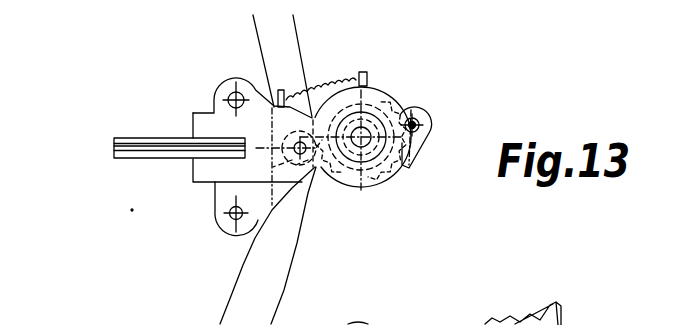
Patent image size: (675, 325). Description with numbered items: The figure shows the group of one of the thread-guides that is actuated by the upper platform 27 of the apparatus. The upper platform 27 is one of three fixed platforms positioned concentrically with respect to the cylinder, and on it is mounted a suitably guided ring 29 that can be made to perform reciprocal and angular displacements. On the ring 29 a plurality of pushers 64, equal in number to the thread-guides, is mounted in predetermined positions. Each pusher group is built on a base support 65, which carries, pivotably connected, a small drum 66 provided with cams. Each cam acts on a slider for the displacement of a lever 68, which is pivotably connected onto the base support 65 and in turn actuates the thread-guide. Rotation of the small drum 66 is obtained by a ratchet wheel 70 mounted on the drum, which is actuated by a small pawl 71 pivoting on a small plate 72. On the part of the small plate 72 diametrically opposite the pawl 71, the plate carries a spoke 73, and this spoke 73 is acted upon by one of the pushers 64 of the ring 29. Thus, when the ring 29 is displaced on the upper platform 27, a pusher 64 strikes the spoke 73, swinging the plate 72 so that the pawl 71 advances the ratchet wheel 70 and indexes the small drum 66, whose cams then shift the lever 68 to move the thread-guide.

The upper platform 27 is at (253, 42).
The ring 29 is at (288, 58).
The pushers 64 is at (258, 225).
The base support 65 is at (257, 206).
The small drum 66 is at (392, 102).
The levers 68 is at (115, 143).
The ratchet wheel 70 is at (380, 180).
The small pawl 71 is at (415, 157).
The small plate 72 is at (416, 112).
The spoke 73 is at (287, 167).